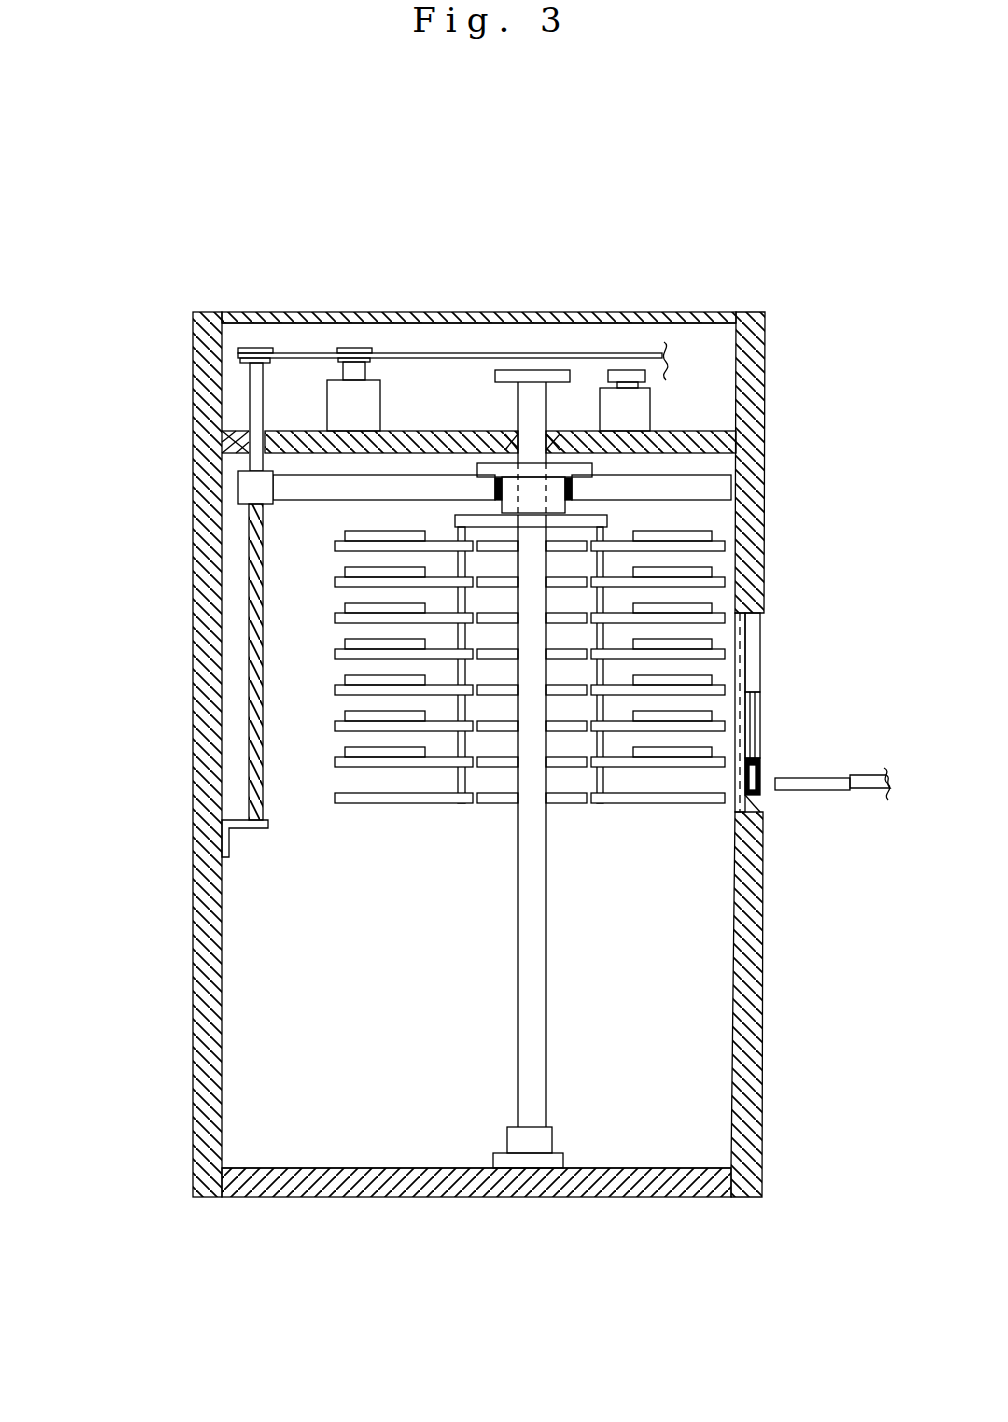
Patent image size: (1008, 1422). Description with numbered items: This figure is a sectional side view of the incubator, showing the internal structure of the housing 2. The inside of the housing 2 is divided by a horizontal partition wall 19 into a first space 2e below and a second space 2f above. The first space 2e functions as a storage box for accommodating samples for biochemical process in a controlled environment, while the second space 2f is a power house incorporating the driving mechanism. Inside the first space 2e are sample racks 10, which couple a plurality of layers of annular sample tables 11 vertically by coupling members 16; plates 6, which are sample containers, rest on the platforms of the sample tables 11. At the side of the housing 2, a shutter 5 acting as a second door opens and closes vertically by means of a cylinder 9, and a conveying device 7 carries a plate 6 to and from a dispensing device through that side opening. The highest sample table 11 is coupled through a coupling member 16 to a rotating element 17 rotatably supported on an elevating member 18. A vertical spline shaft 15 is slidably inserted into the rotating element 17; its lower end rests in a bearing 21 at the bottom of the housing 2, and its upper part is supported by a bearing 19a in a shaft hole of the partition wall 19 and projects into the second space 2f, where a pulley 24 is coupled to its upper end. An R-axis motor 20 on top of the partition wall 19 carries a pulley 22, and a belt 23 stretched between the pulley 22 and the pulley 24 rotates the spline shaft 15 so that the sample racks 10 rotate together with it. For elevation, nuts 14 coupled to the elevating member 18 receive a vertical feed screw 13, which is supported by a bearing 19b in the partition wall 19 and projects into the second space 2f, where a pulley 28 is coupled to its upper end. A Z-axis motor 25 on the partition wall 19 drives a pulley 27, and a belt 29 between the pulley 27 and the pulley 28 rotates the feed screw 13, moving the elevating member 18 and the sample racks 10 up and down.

The housing 2 is at (760, 355).
The first space 2e is at (262, 1063).
The second space 2f is at (295, 372).
The shutter 5 is at (752, 800).
The plate 6 is at (352, 757).
The conveying device 7 is at (865, 782).
The cylinder 9 is at (752, 655).
The sample rack 10 is at (367, 813).
The sample table 11 is at (388, 548).
The feed screw 13 is at (247, 655).
The nut 14 is at (250, 487).
The spline shaft 15 is at (532, 938).
The coupling member 16 is at (600, 563).
The rotating element 17 is at (512, 492).
The elevating member 18 is at (725, 493).
The partition wall 19 is at (693, 443).
The bearing 19a is at (736, 463).
The bearing 19b is at (228, 446).
The R-axis motor 20 is at (635, 410).
The bearing 21 is at (518, 1142).
The pulley 22 is at (630, 372).
The belt 23 is at (588, 377).
The pulley 24 is at (528, 370).
The Z-axis motor 25 is at (362, 410).
The pulley 27 is at (353, 352).
The pulley 28 is at (250, 348).
The belt 29 is at (457, 352).